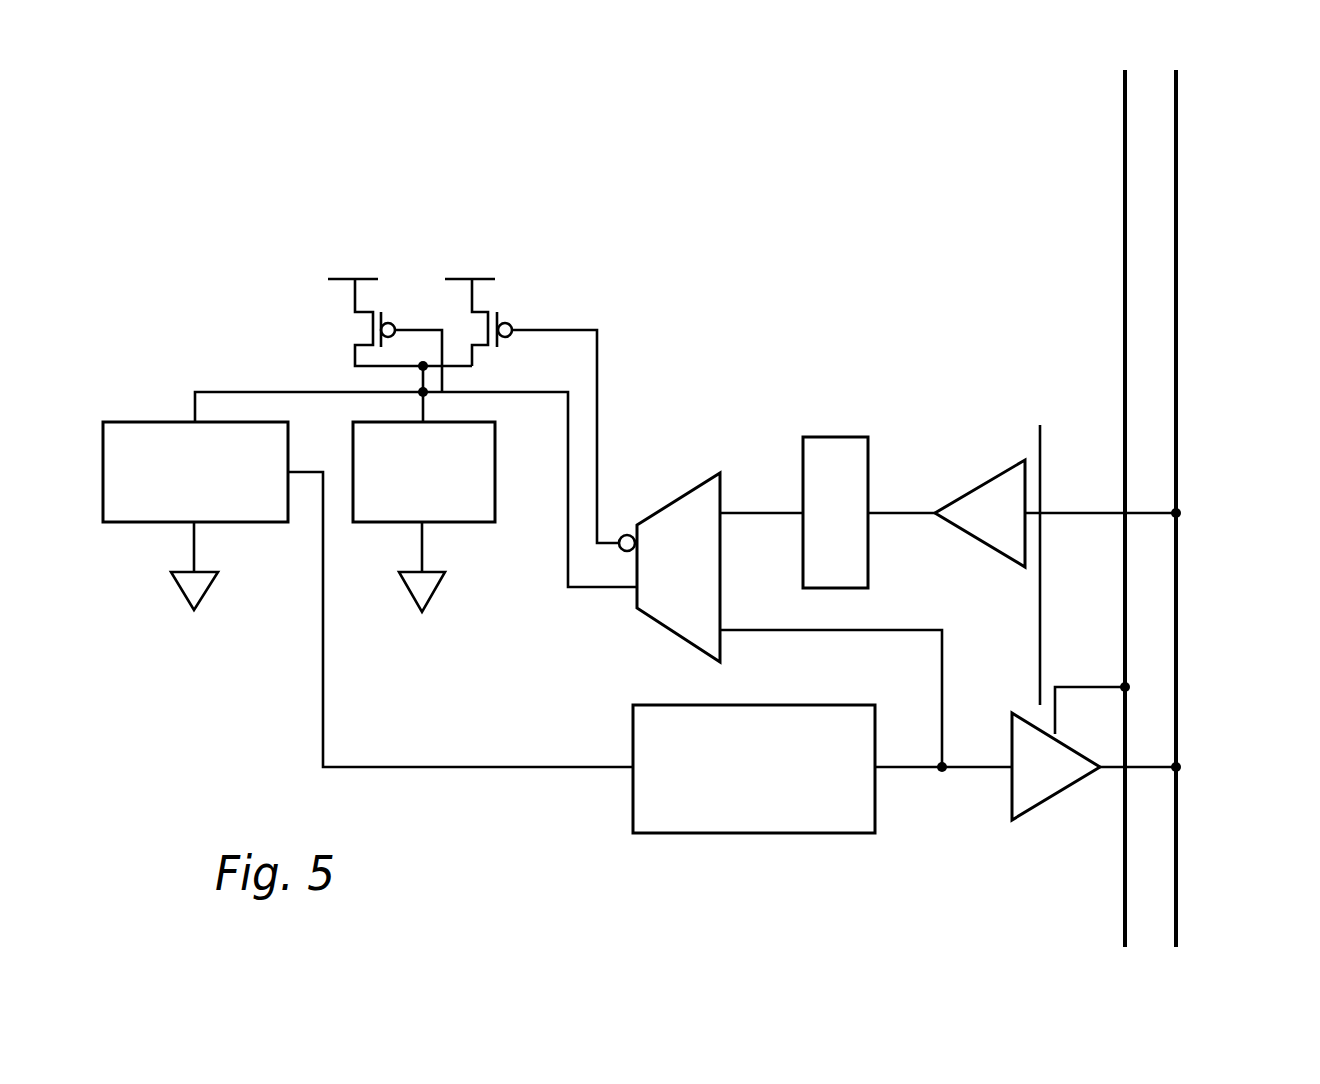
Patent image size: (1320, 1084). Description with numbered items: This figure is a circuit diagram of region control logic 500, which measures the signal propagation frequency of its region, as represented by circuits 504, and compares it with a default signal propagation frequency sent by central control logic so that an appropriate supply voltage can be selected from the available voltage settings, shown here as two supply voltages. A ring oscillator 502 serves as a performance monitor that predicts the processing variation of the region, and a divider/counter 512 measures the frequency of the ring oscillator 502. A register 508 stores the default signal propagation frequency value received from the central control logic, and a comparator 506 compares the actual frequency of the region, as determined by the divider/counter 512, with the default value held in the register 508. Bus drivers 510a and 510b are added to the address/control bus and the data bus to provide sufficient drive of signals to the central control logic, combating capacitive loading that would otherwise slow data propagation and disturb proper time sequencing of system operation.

The region control logic 500 is at (1305, 105).
The ring oscillator 502 is at (377, 233).
The circuits 504 is at (492, 233).
The comparator 506 is at (657, 623).
The register 508 is at (840, 437).
The bus driver 510a is at (978, 478).
The bus driver 510b is at (1070, 887).
The divider/counter 512 is at (747, 836).